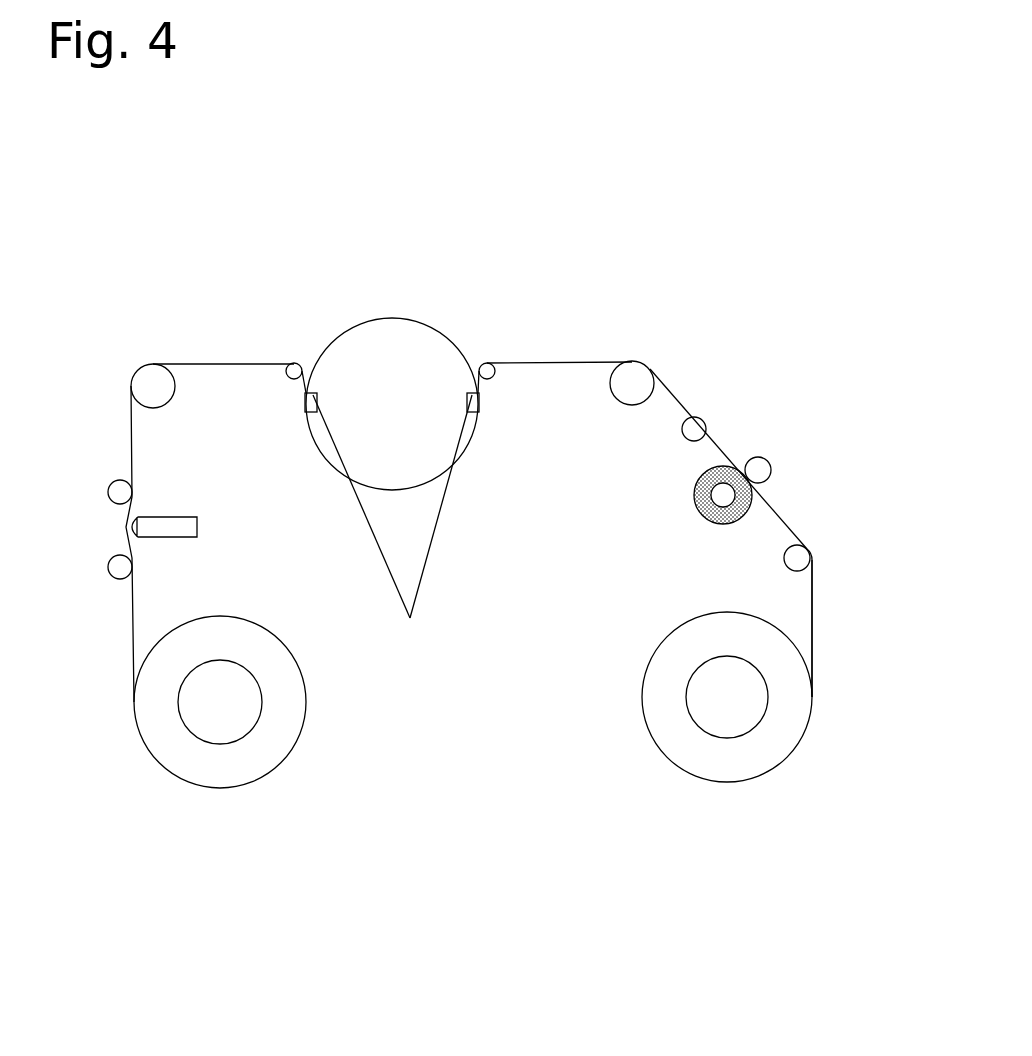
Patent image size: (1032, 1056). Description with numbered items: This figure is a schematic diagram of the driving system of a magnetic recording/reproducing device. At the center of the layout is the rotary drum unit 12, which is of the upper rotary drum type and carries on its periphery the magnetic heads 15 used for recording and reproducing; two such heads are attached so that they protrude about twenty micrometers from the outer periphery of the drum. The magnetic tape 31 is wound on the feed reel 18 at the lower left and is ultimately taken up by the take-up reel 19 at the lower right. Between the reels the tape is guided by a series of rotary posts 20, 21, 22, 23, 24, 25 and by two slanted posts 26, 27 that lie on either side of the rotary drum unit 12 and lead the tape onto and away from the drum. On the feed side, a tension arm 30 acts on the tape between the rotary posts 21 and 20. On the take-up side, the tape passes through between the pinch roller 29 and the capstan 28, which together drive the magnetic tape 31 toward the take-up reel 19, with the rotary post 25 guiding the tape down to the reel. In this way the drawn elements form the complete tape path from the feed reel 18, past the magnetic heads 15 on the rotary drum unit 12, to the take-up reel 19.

The rotary drum unit 12 is at (373, 365).
The magnetic head 15 is at (392, 531).
The feed reel 18 is at (185, 760).
The take-up reel 19 is at (710, 762).
The rotary post 20 is at (113, 573).
The rotary post 21 is at (122, 493).
The rotary post 22 is at (150, 390).
The rotary post 23 is at (636, 380).
The rotary post 24 is at (696, 428).
The rotary post 25 is at (797, 558).
The slanted post 26 is at (292, 368).
The slanted post 27 is at (488, 370).
The capstan 28 is at (760, 468).
The pinch roller 29 is at (703, 494).
The tension arm 30 is at (173, 537).
The magnetic tape 31 is at (813, 618).